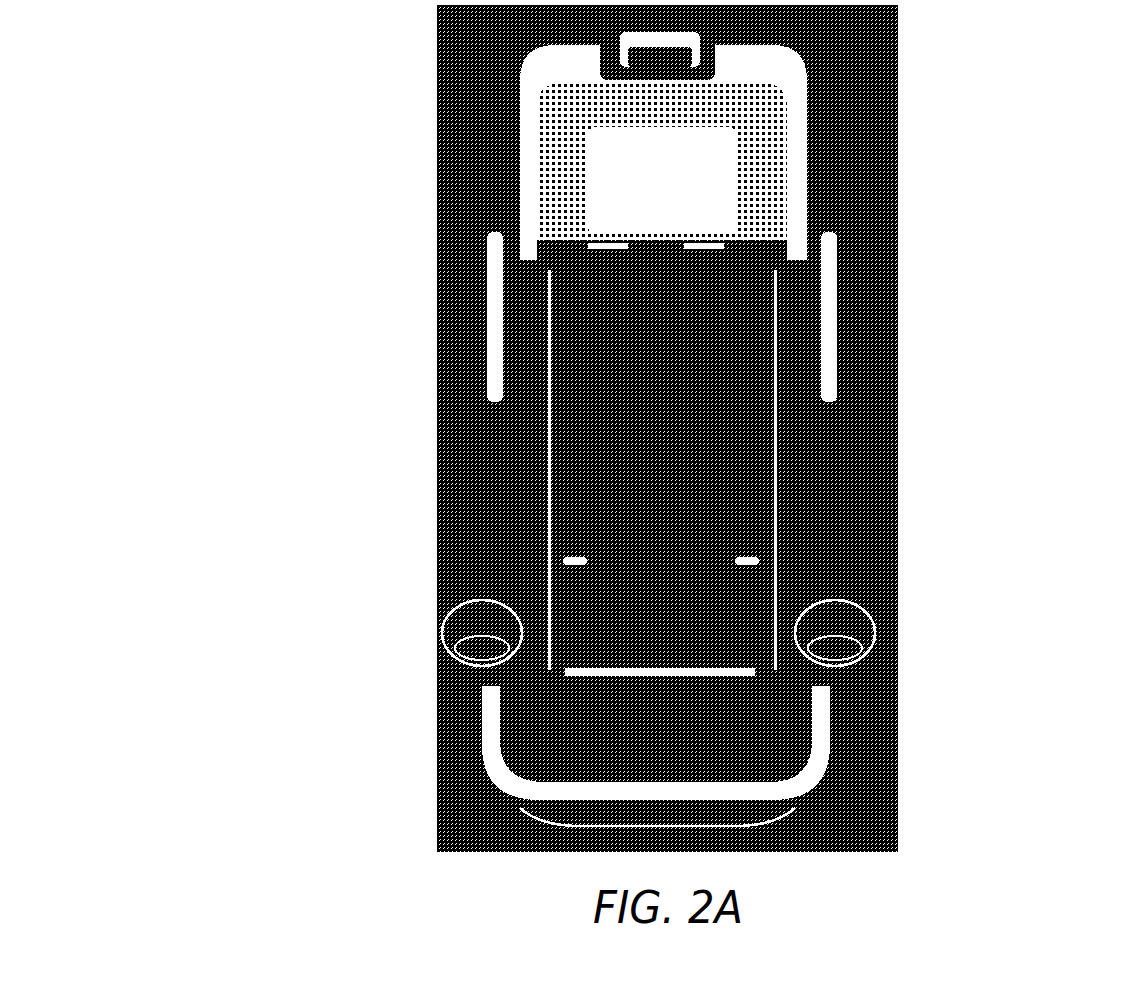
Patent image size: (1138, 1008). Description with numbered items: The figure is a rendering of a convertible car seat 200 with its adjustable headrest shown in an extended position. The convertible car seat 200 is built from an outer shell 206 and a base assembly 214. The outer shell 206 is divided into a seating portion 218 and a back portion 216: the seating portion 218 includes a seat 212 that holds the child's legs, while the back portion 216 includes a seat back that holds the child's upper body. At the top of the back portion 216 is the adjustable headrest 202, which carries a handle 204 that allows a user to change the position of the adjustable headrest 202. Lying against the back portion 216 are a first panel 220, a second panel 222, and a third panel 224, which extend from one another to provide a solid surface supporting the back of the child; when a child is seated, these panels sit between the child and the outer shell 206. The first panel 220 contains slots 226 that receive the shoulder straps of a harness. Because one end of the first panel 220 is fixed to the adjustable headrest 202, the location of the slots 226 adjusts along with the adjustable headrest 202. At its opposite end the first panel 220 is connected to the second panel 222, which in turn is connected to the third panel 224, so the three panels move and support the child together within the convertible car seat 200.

The convertible car seat 200 is at (278, 100).
The adjustable headrest 202 is at (525, 155).
The handle 204 is at (700, 51).
The outer shell 206 is at (825, 283).
The seat 212 is at (560, 704).
The base assembly 214 is at (805, 786).
The back portion 216 is at (840, 368).
The seating portion 218 is at (508, 746).
The first panel 220 is at (594, 327).
The second panel 222 is at (590, 410).
The third panel 224 is at (594, 466).
The slots 226 is at (590, 260).